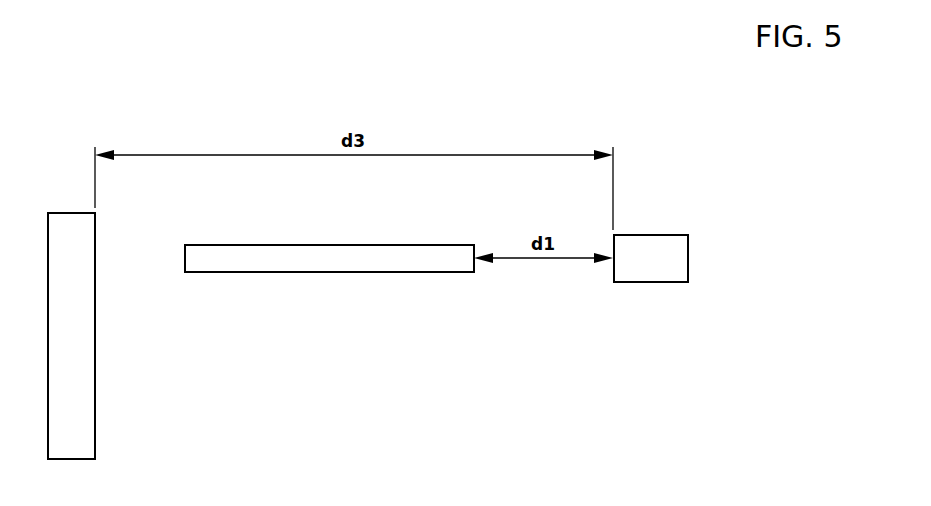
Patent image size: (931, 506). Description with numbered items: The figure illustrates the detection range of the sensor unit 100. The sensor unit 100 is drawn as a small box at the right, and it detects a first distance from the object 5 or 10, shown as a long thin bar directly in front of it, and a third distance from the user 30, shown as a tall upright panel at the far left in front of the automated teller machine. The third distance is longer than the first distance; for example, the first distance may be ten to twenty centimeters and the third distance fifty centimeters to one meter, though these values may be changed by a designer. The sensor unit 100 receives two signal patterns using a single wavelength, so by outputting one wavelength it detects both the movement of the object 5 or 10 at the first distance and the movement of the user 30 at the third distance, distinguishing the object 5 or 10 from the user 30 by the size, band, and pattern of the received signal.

The user 30 is at (90, 397).
The object 5 is at (321, 262).
The object 10 is at (329, 258).
The sensor unit 100 is at (678, 261).